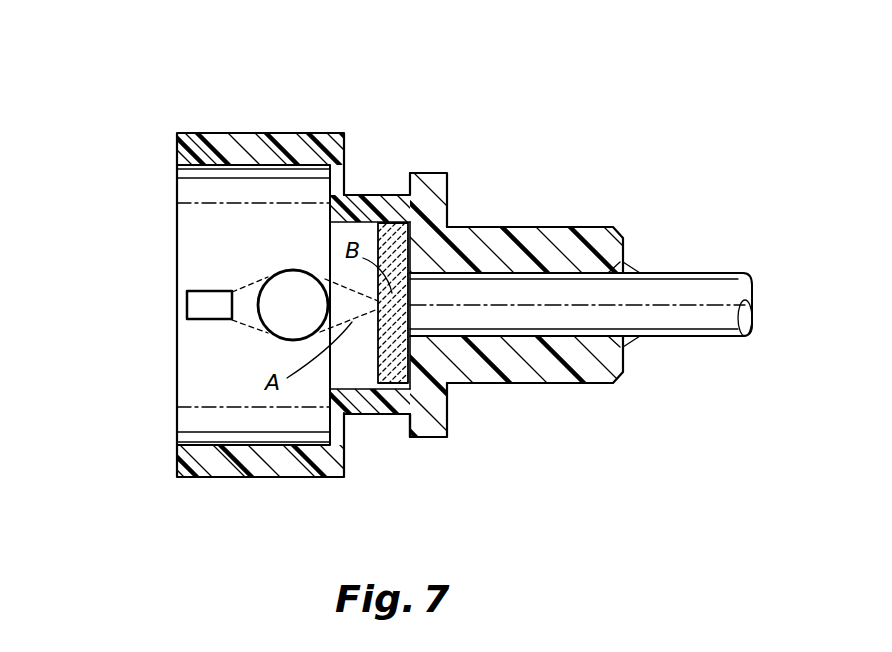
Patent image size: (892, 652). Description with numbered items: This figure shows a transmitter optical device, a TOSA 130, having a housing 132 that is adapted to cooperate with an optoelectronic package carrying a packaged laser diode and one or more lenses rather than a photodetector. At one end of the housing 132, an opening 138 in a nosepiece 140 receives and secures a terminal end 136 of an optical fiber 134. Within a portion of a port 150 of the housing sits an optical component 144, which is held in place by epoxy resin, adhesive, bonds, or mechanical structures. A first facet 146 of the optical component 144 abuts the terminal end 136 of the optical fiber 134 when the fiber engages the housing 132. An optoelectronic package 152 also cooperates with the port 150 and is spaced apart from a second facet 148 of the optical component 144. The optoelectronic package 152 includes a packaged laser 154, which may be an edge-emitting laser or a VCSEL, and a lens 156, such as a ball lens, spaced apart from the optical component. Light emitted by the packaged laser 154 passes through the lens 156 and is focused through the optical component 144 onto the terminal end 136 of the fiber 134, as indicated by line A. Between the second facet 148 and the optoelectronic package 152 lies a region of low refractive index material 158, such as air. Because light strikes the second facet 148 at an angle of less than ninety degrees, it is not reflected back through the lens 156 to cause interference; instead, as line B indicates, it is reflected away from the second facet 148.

The TOSA 130 is at (659, 139).
The housing 132 is at (345, 157).
The optical fiber 134 is at (683, 320).
The terminal end 136 is at (447, 307).
The opening 138 is at (503, 380).
The nosepiece 140 is at (600, 375).
The optical component 144 is at (391, 225).
The first facet 146 is at (427, 310).
The second facet 148 is at (375, 318).
The port 150 is at (333, 380).
The optoelectronic package 152 is at (200, 217).
The packaged laser 154 is at (197, 308).
The lens 156 is at (278, 320).
The region of low refractive index material 158 is at (347, 277).